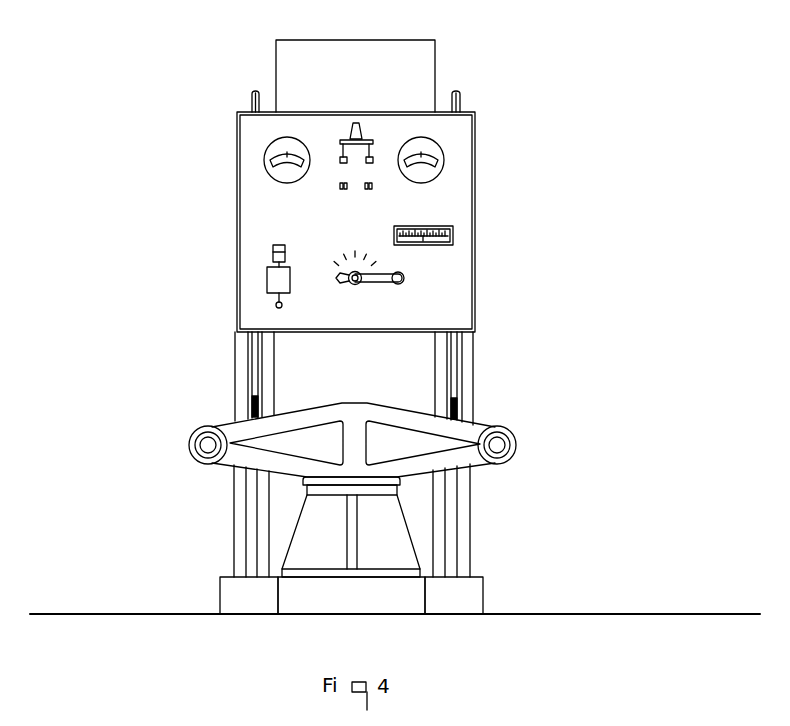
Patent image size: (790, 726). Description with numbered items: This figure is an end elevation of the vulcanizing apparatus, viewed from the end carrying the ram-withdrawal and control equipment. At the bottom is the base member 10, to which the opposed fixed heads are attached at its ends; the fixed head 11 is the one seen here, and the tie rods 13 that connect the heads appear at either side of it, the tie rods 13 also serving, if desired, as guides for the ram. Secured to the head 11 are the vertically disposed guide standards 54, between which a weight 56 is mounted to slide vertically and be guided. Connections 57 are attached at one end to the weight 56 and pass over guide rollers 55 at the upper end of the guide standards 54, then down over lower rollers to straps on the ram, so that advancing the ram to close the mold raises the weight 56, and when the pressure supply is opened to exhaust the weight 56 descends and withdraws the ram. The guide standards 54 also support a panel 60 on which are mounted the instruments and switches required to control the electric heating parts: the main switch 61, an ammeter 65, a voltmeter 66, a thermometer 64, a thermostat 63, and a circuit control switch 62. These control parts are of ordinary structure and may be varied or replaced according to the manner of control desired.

The base member 10 is at (440, 597).
The fixed head 11 is at (385, 468).
The tie rods 13 is at (502, 443).
The guide standards 54 is at (246, 368).
The guide rollers 55 is at (250, 97).
The weight 56 is at (343, 78).
The connections 57 is at (257, 387).
The panel 60 is at (455, 137).
The main switch 61 is at (367, 142).
The circuit control switch 62 is at (431, 281).
The thermostat 63 is at (272, 277).
The thermometer 64 is at (455, 233).
The ammeter 65 is at (272, 167).
The voltmeter 66 is at (440, 173).